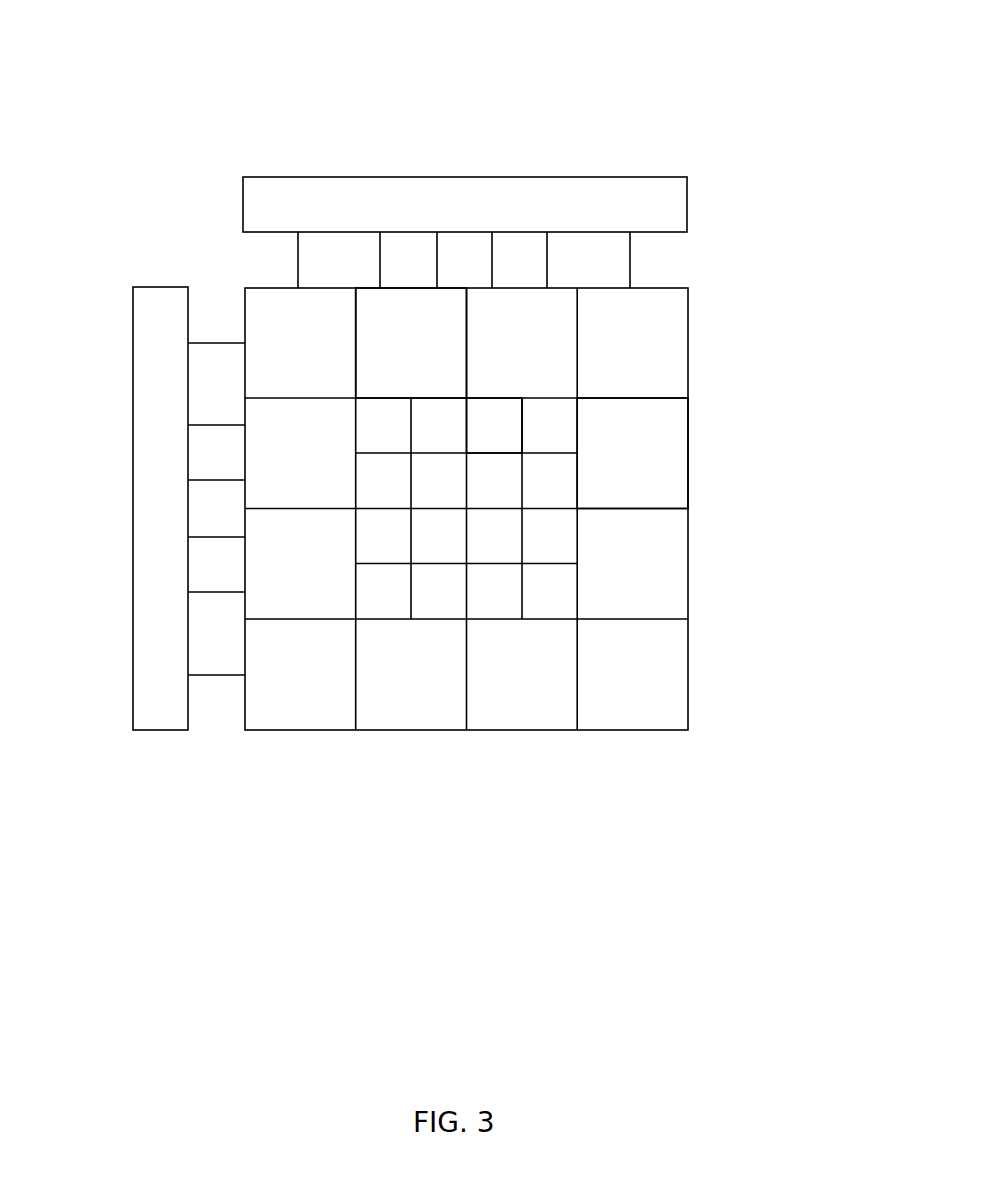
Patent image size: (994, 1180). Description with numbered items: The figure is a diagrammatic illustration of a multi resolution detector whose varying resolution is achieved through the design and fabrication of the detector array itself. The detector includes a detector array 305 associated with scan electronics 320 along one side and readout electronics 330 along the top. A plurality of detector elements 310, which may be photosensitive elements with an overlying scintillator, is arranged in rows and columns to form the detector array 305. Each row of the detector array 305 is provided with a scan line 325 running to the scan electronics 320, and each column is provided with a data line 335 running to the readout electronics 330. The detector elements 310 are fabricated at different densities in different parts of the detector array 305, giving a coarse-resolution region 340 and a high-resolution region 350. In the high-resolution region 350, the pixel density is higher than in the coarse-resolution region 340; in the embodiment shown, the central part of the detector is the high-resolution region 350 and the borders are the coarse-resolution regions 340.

The detector array 305 is at (690, 332).
The detector element 310 is at (665, 460).
The scan electronics 320 is at (132, 337).
The scan line 325 is at (202, 679).
The readout electronics 330 is at (612, 175).
The data line 335 is at (295, 279).
The coarse-resolution region 340 is at (377, 337).
The high-resolution region 350 is at (500, 417).